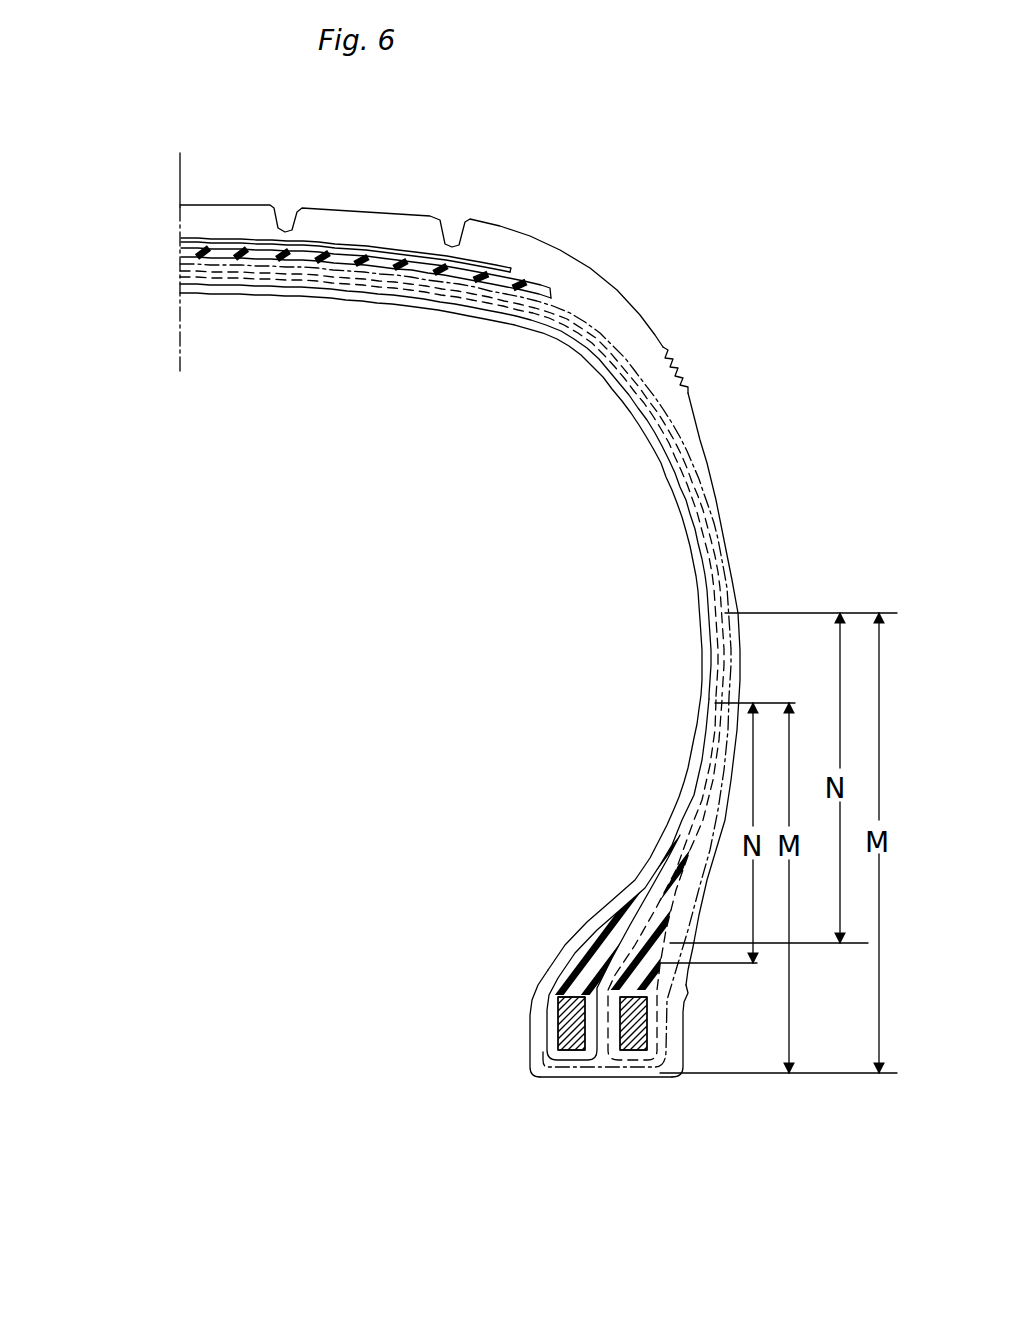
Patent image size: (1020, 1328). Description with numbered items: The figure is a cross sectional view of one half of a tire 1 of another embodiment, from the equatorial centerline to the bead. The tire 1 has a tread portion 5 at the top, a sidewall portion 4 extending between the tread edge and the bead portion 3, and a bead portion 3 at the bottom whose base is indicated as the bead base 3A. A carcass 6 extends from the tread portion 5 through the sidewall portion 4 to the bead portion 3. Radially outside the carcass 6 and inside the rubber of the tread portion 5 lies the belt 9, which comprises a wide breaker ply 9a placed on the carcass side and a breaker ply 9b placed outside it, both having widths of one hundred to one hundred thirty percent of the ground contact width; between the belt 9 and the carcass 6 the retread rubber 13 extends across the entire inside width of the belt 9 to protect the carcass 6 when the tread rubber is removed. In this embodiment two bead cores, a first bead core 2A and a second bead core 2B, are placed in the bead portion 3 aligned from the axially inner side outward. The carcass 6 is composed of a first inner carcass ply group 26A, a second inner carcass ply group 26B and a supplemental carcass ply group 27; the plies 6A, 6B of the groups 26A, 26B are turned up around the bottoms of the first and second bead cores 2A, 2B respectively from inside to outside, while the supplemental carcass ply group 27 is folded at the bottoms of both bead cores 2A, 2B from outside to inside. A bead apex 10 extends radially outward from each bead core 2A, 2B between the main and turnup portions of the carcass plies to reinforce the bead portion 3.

The tire 1 is at (712, 418).
The first bead core 2A is at (562, 1052).
The second bead core 2B is at (630, 1052).
The bead portion 3 is at (510, 997).
The bead base 3A is at (582, 1078).
The sidewall portion 4 is at (757, 637).
The tread portion 5 is at (398, 208).
The carcass 6 is at (468, 553).
The carcass ply 6A is at (700, 597).
The carcass ply 6B is at (700, 678).
The belt 9 is at (94, 190).
The wide breaker ply 9a is at (180, 249).
The breaker ply 9b is at (180, 242).
The bead apex 10 is at (578, 975).
The retread rubber 13 is at (180, 257).
The first inner carcass ply group 26A is at (547, 715).
The second inner carcass ply group 26B is at (548, 605).
The supplemental carcass ply group 27 is at (710, 530).